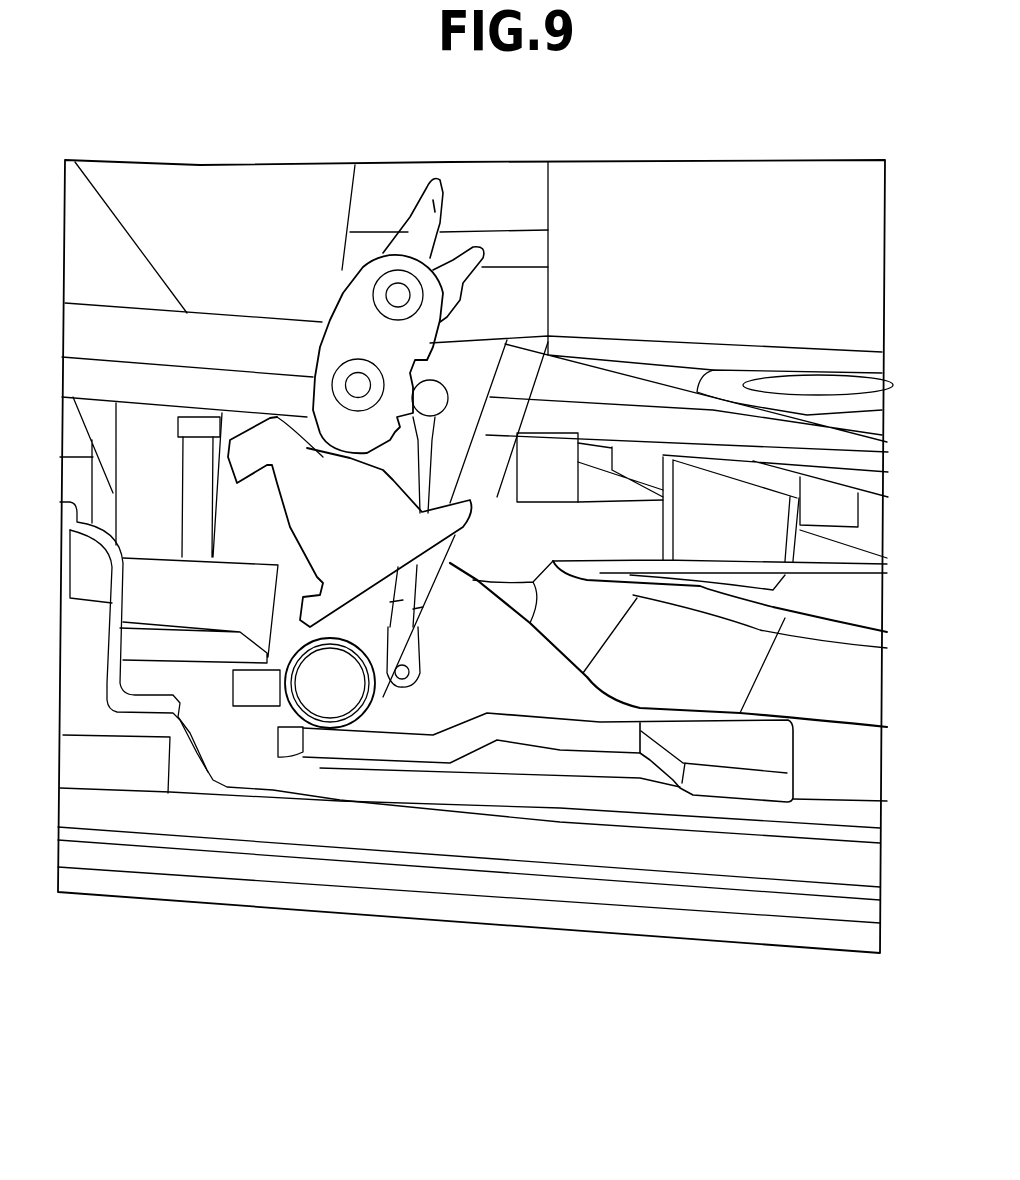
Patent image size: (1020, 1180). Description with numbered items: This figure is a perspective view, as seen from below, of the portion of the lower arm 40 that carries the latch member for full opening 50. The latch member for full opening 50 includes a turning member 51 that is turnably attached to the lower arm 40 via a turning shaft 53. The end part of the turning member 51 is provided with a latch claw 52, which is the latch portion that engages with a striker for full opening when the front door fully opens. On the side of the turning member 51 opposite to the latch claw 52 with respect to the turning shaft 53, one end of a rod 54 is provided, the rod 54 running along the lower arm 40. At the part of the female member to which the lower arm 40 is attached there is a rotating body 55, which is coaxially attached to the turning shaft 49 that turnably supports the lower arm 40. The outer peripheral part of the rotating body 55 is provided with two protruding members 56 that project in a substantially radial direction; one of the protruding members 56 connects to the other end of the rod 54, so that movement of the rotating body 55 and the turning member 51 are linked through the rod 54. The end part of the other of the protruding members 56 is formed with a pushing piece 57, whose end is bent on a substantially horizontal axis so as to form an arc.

The lower arm 40 is at (523, 350).
The turning shaft 49 is at (332, 687).
The latch member for full opening 50 is at (317, 352).
The turning member 51 is at (360, 320).
The latch claw 52 is at (447, 183).
The turning shaft 53 is at (398, 293).
The rod 54 is at (533, 440).
The rotating body 55 is at (385, 695).
The protruding members 56 is at (290, 723).
The pushing piece 57 is at (298, 762).